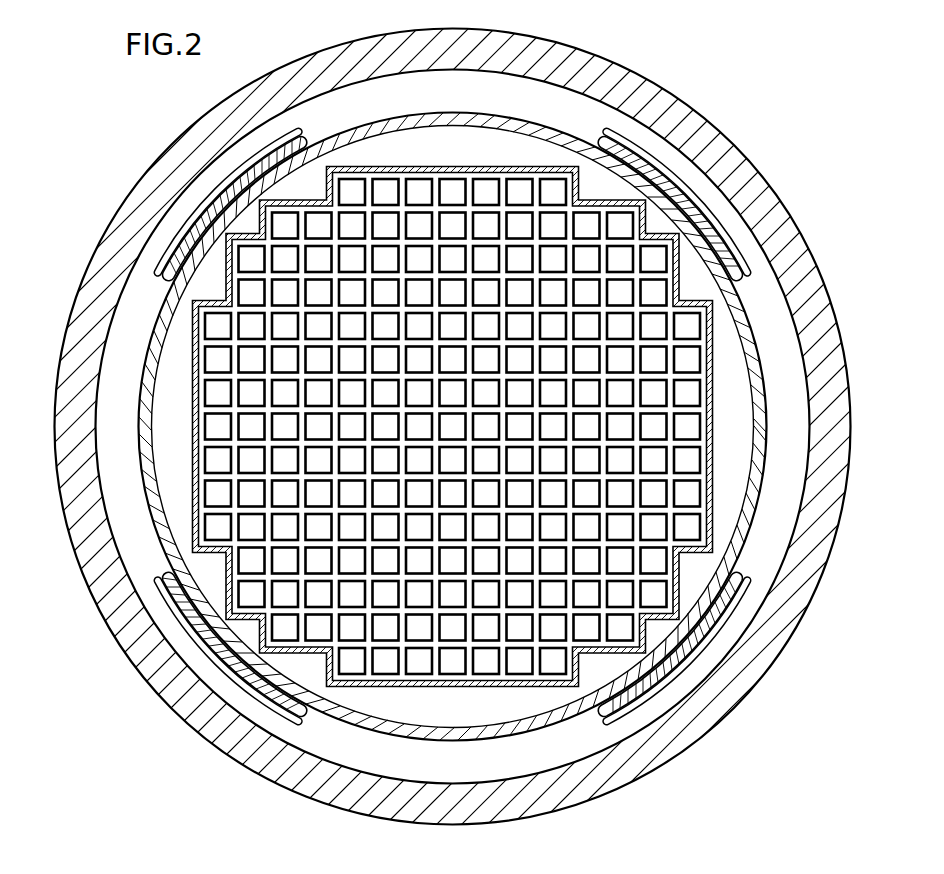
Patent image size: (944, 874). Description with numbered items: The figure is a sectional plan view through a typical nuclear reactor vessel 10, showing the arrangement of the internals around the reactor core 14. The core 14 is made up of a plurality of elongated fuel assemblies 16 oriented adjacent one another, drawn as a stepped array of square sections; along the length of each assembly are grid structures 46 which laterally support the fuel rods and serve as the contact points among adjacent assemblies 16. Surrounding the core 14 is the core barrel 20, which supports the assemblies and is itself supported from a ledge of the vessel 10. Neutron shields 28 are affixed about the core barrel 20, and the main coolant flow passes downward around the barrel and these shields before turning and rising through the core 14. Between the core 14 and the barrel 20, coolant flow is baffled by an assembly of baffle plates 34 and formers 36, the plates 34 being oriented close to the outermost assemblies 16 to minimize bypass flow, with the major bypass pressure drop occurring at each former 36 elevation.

The nuclear reactor vessel 10 is at (497, 803).
The reactor core 14 is at (215, 420).
The fuel assembly 16 is at (458, 176).
The core barrel 20 is at (764, 404).
The neutron shield 28 is at (305, 720).
The baffle plate 34 is at (457, 686).
The former 36 is at (660, 210).
The grid structure 46 is at (348, 212).